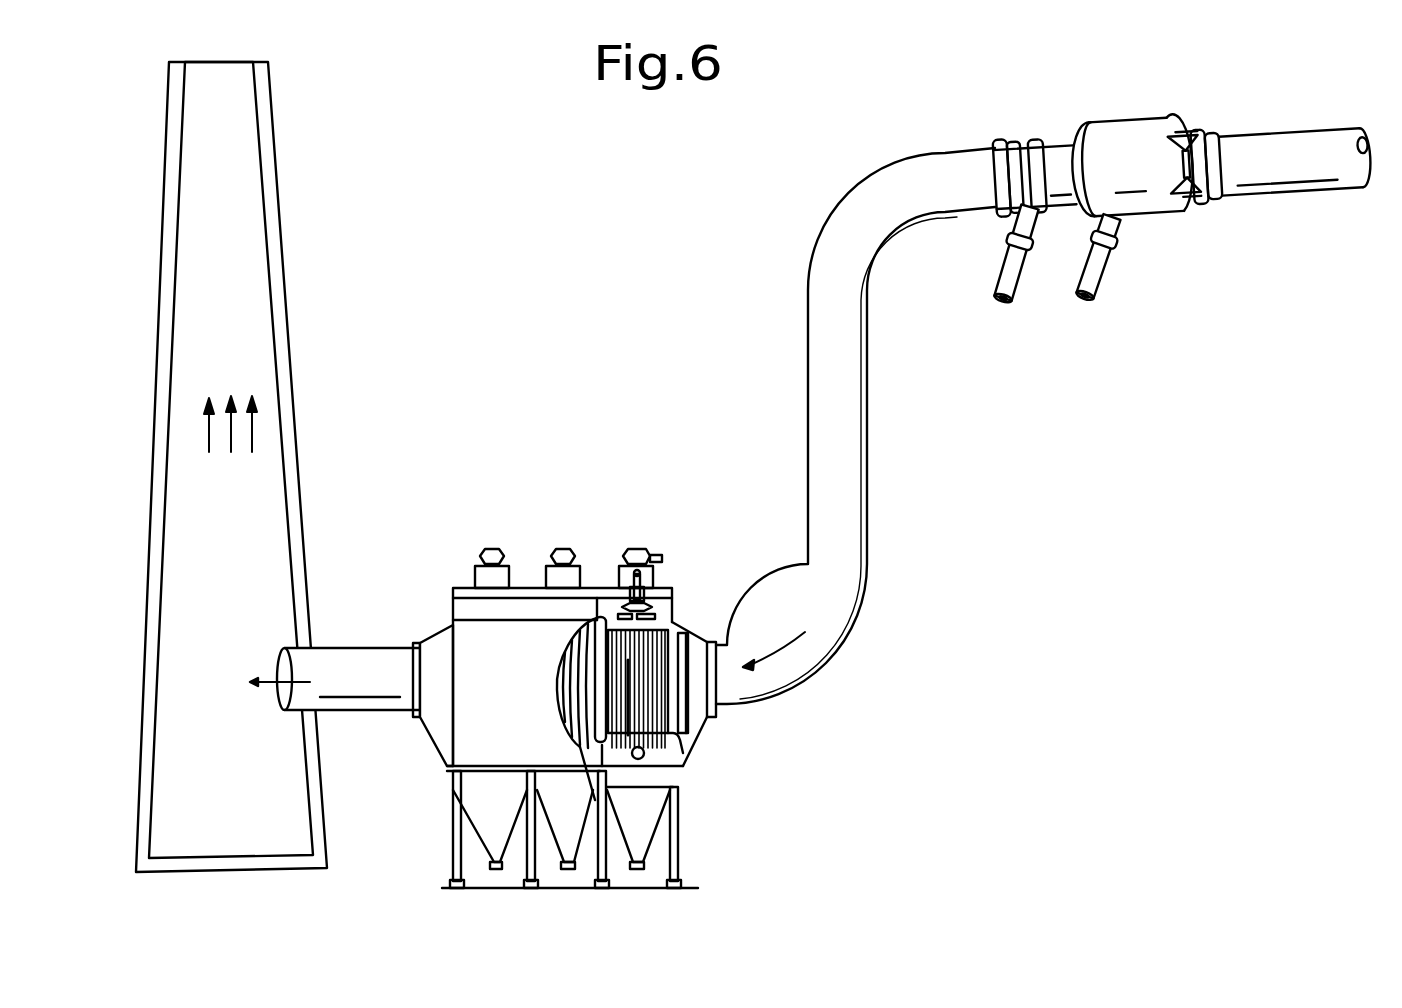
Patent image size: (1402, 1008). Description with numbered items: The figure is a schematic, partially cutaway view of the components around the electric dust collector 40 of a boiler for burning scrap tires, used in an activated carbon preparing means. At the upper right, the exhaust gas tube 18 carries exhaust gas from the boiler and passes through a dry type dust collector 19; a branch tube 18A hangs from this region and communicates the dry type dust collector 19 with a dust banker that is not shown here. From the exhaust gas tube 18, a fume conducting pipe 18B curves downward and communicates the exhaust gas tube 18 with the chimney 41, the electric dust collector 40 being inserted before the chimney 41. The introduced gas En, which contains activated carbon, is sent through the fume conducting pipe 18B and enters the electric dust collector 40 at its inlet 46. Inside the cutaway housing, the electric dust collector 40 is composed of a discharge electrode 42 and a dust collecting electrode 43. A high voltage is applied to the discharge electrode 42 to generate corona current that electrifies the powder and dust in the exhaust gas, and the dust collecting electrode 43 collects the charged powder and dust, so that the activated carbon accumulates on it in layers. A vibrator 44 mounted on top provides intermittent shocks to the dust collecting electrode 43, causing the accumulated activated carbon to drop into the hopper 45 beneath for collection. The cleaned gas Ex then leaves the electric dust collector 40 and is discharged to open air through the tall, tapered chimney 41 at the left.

The exhaust gas tube 18 is at (1248, 156).
The branch tube 18A is at (1108, 277).
The fume conducting pipe 18B is at (873, 557).
The dry type dust collector 19 is at (1118, 143).
The electric dust collector 40 is at (503, 702).
The chimney 41 is at (275, 203).
The discharge electrode 42 is at (650, 659).
The dust collecting electrode 43 is at (628, 702).
The vibrator 44 is at (640, 550).
The hopper 45 is at (485, 810).
The inlet flange 46 is at (713, 641).